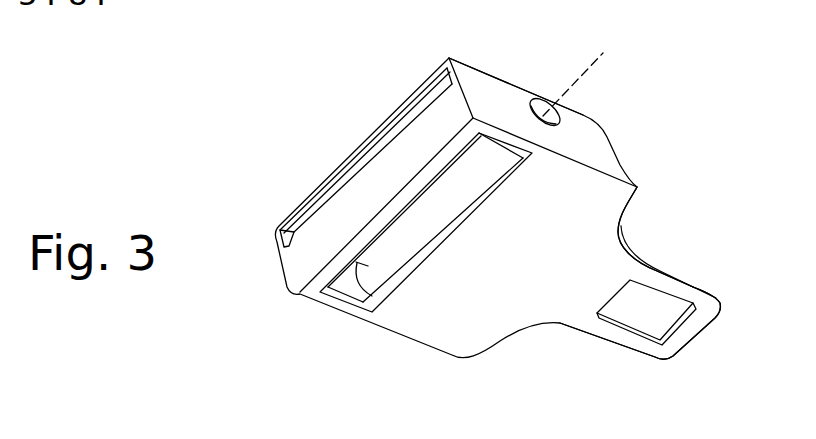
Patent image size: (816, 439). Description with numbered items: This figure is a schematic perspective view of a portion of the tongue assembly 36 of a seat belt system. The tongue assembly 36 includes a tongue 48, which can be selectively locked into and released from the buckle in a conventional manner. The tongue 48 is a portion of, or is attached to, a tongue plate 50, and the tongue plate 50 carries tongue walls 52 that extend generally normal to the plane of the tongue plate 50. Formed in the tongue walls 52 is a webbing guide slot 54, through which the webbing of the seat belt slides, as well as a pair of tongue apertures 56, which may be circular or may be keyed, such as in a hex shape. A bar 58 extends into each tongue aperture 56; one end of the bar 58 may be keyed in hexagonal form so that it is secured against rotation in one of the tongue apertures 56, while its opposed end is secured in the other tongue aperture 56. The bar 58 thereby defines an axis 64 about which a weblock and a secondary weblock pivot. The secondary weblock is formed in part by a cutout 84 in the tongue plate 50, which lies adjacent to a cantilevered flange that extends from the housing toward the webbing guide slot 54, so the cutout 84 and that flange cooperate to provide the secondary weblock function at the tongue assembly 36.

The tongue assembly 36 is at (637, 144).
The tongue 48 is at (687, 278).
The tongue plate 50 is at (634, 208).
The tongue walls 52 is at (492, 70).
The webbing guide slot 54 is at (302, 227).
The tongue apertures 56 is at (568, 121).
The bar 58 is at (386, 242).
The axis 64 is at (571, 83).
The cutout 84 is at (428, 265).